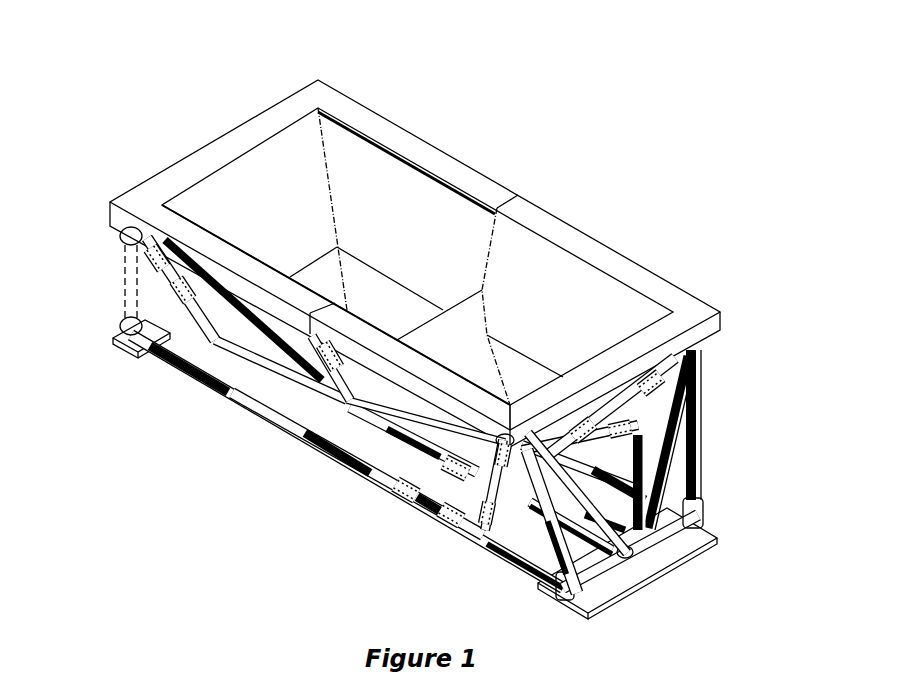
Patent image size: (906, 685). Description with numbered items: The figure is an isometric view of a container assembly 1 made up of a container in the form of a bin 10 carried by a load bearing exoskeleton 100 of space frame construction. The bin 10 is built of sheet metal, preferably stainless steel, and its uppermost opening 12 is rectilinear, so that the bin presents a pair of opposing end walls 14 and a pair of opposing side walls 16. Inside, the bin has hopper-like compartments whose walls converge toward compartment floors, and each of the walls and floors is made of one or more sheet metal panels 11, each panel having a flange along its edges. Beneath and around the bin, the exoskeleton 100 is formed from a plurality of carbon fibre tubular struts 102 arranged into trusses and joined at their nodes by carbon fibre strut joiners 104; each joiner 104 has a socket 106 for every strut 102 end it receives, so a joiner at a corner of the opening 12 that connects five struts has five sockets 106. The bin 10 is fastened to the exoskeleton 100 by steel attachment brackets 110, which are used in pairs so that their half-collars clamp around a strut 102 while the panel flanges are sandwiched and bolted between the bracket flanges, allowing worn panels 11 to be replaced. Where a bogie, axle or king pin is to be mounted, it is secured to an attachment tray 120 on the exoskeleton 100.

The container assembly 1 is at (412, 110).
The bin 10 is at (270, 102).
The sheet metal panels 11 is at (277, 226).
The uppermost opening 12 is at (445, 216).
The end walls 14 is at (218, 195).
The side walls 16 is at (477, 225).
The exoskeleton 100 is at (118, 298).
The tubular struts 102 is at (126, 262).
The strut joiners 104 is at (135, 340).
The socket 106 is at (700, 508).
The attachment brackets 110 is at (255, 420).
The attachment tray 120 is at (150, 375).